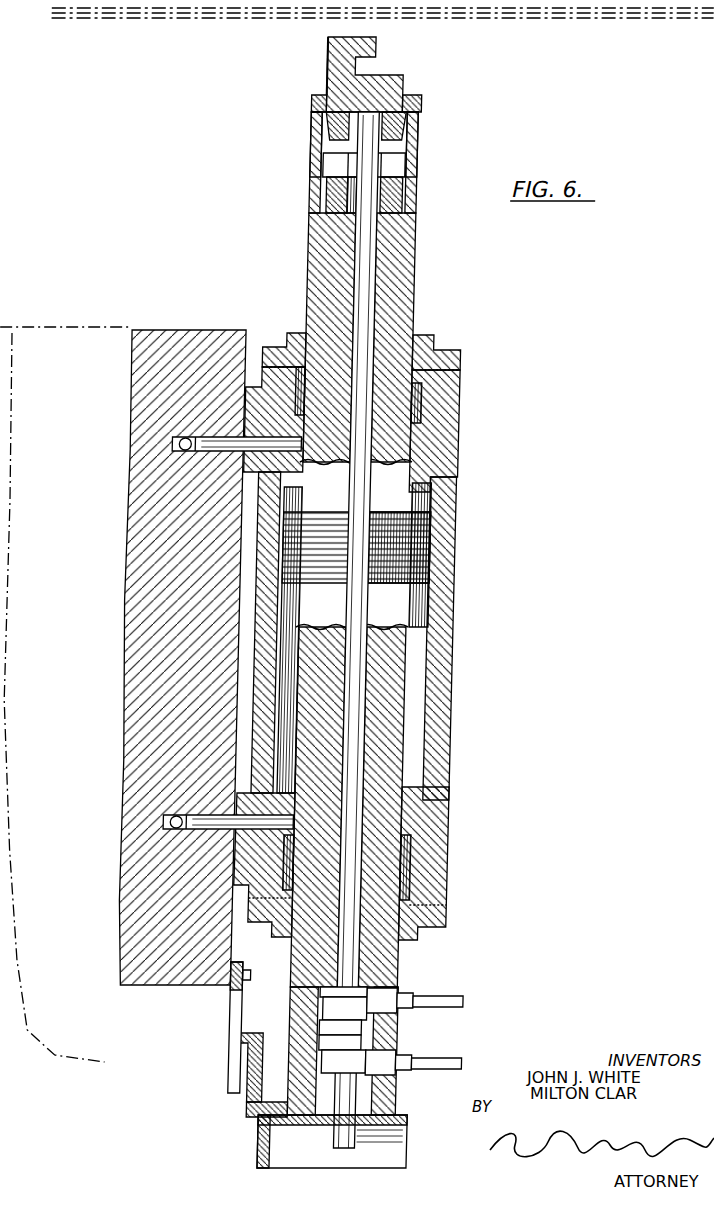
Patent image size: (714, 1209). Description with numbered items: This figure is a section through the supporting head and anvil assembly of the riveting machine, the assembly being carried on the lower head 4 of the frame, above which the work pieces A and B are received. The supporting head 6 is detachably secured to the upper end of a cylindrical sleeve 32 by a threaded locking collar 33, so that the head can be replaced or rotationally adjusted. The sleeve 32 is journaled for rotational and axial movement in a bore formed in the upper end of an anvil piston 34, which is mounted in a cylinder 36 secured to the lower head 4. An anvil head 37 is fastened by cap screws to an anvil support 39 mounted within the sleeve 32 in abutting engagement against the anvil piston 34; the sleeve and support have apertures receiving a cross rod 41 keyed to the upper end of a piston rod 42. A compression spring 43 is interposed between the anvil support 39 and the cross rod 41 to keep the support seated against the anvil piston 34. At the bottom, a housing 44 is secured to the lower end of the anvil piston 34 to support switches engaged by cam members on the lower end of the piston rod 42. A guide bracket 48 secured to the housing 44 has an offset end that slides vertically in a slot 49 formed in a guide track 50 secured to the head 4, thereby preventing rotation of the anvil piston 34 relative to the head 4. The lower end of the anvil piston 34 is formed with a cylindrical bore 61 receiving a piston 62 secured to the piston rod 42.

The lower head 4 is at (170, 330).
The supporting head 6 is at (330, 50).
The cylindrical sleeve 32 is at (325, 127).
The threaded locking collar 33 is at (314, 100).
The anvil piston 34 is at (324, 304).
The cylinder 36 is at (469, 686).
The anvil head 37 is at (378, 56).
The anvil support 39 is at (403, 134).
The cross rod 41 is at (393, 158).
The piston rod 42 is at (376, 316).
The compression spring 43 is at (410, 188).
The housing 44 is at (287, 1138).
The guide bracket 48 is at (278, 1104).
The slot 49 is at (256, 1074).
The guide track 50 is at (257, 1012).
The cylindrical bore 61 is at (392, 992).
The piston 62 is at (392, 1030).
The work piece A is at (54, 11).
The work piece B is at (58, 17).